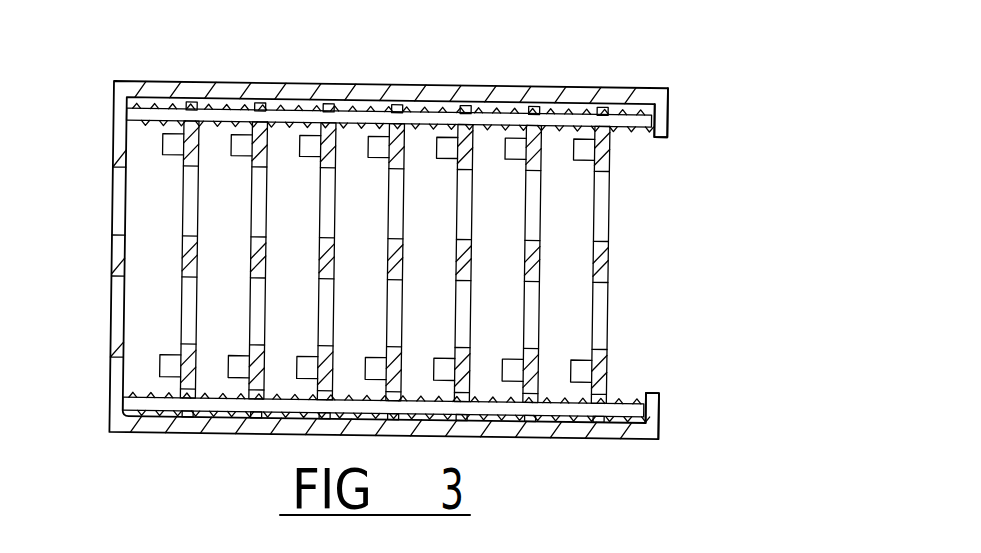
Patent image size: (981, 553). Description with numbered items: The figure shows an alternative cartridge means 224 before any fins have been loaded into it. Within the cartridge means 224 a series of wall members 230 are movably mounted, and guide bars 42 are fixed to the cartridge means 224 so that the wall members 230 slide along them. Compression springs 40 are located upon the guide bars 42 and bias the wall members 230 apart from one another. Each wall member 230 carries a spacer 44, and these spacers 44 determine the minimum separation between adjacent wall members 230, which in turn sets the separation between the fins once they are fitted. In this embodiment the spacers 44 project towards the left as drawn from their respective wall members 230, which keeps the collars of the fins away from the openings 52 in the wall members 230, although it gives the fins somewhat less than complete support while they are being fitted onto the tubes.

The cartridge means 224 is at (756, 117).
The compression springs 40 is at (161, 81).
The guide bars 42 is at (633, 91).
The spacers 44 is at (243, 147).
The wall members 230 is at (462, 96).
The openings 52 is at (183, 343).